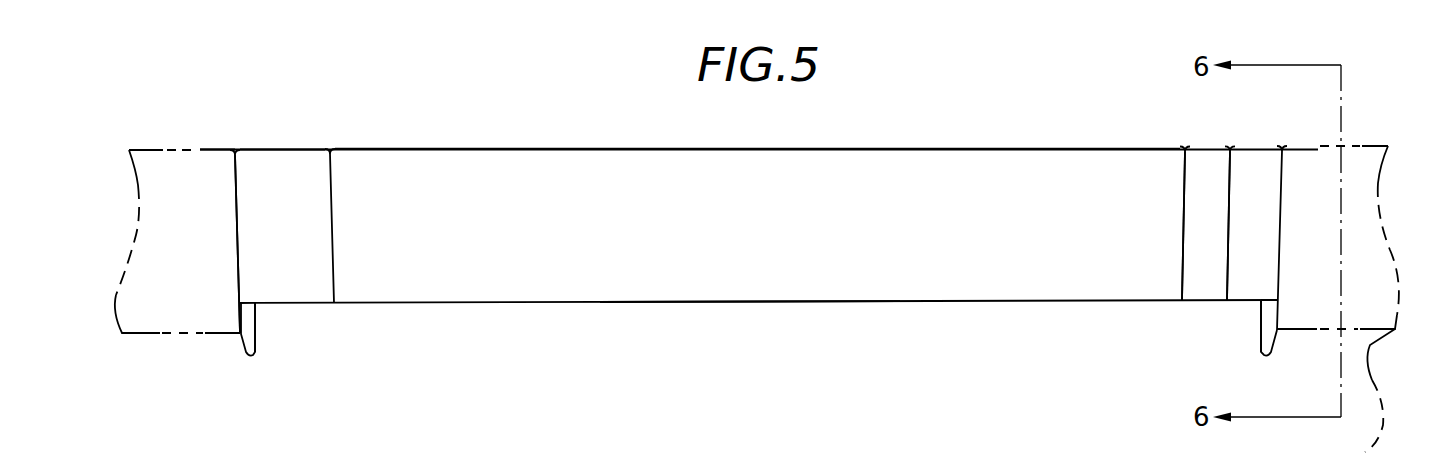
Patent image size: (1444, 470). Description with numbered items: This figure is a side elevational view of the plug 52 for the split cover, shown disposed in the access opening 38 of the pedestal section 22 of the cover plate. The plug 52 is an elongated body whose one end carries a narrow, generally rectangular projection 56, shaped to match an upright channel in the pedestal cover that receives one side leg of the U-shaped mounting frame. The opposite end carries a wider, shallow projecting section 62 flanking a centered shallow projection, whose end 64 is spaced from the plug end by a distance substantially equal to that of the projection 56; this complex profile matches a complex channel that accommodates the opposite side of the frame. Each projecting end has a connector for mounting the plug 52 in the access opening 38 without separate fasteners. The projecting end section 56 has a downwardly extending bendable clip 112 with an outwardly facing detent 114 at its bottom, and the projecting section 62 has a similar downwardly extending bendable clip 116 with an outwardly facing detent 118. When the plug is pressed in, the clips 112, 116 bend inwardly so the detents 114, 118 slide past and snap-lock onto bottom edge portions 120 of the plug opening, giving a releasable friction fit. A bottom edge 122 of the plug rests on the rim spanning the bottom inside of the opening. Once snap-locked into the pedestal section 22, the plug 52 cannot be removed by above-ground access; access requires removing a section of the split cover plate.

The pedestal section of the cover plate 22 is at (207, 150).
The access opening 38 is at (240, 229).
The plug 52 is at (418, 165).
The projection 56 is at (285, 158).
The projecting section 62 is at (1254, 158).
The end of the projection 64 is at (1207, 277).
The bendable clip 112 is at (245, 313).
The detent 114 is at (250, 348).
The bendable clip 116 is at (1262, 312).
The detent 118 is at (1262, 340).
The bottom edge portions of the plug opening 120 is at (172, 334).
The bottom edge of the plug 122 is at (728, 302).